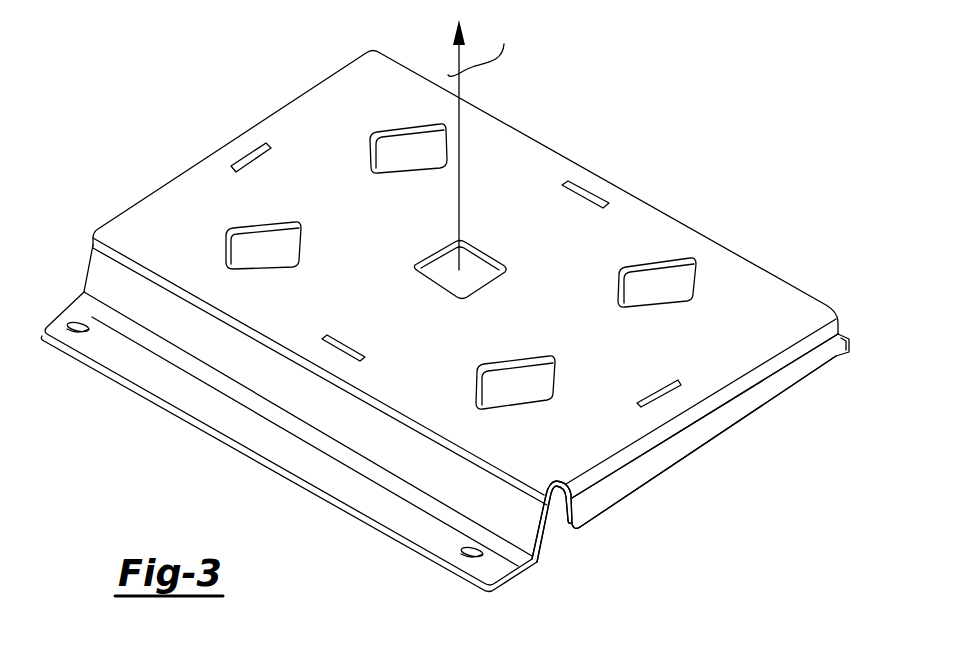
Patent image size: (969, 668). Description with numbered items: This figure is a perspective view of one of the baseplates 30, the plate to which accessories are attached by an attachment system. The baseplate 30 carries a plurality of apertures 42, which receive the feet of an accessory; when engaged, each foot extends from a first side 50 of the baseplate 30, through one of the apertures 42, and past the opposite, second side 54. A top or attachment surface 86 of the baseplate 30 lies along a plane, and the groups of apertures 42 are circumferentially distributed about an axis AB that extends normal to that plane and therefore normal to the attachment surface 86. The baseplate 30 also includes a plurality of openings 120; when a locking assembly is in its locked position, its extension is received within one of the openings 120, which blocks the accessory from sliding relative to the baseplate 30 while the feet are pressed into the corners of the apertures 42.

The baseplate 30 is at (697, 243).
The aperture 42 is at (258, 236).
The first side 50 is at (745, 283).
The second side 54 is at (558, 540).
The top or attachment surface 86 is at (573, 448).
The opening 120 is at (244, 150).